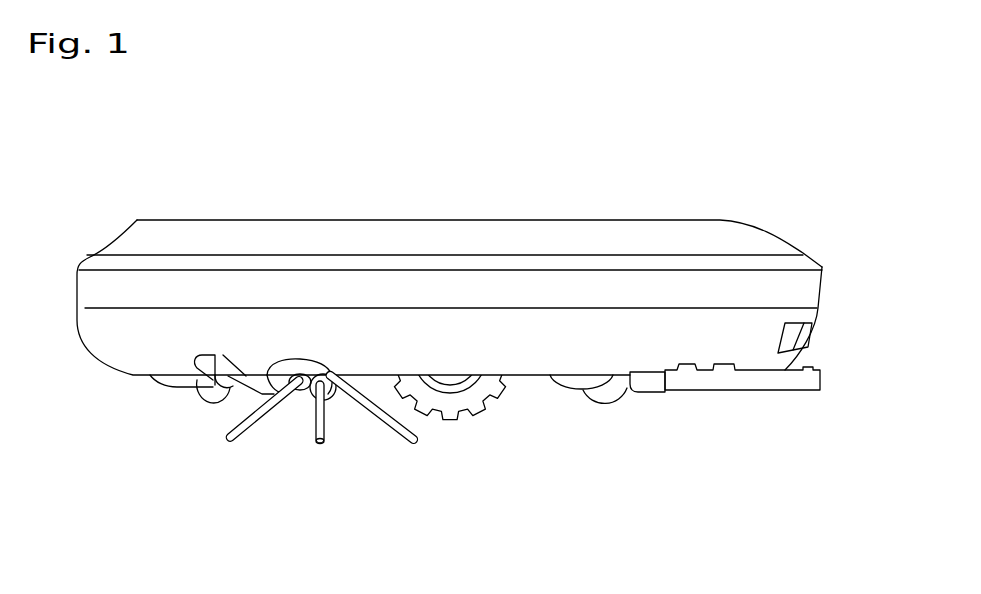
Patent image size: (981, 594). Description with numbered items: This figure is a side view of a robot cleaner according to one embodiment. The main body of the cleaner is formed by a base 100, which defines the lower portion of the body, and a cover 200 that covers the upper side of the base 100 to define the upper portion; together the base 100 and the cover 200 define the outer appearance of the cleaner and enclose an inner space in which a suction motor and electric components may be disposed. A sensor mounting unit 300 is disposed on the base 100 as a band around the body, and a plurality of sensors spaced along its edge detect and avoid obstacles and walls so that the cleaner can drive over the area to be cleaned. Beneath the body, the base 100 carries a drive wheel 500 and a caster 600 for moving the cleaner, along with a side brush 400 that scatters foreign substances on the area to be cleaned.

The base 100 is at (752, 335).
The cover 200 is at (747, 238).
The sensor mounting unit 300 is at (798, 287).
The side brush 400 is at (330, 407).
The drive wheel 500 is at (473, 417).
The caster 600 is at (190, 400).